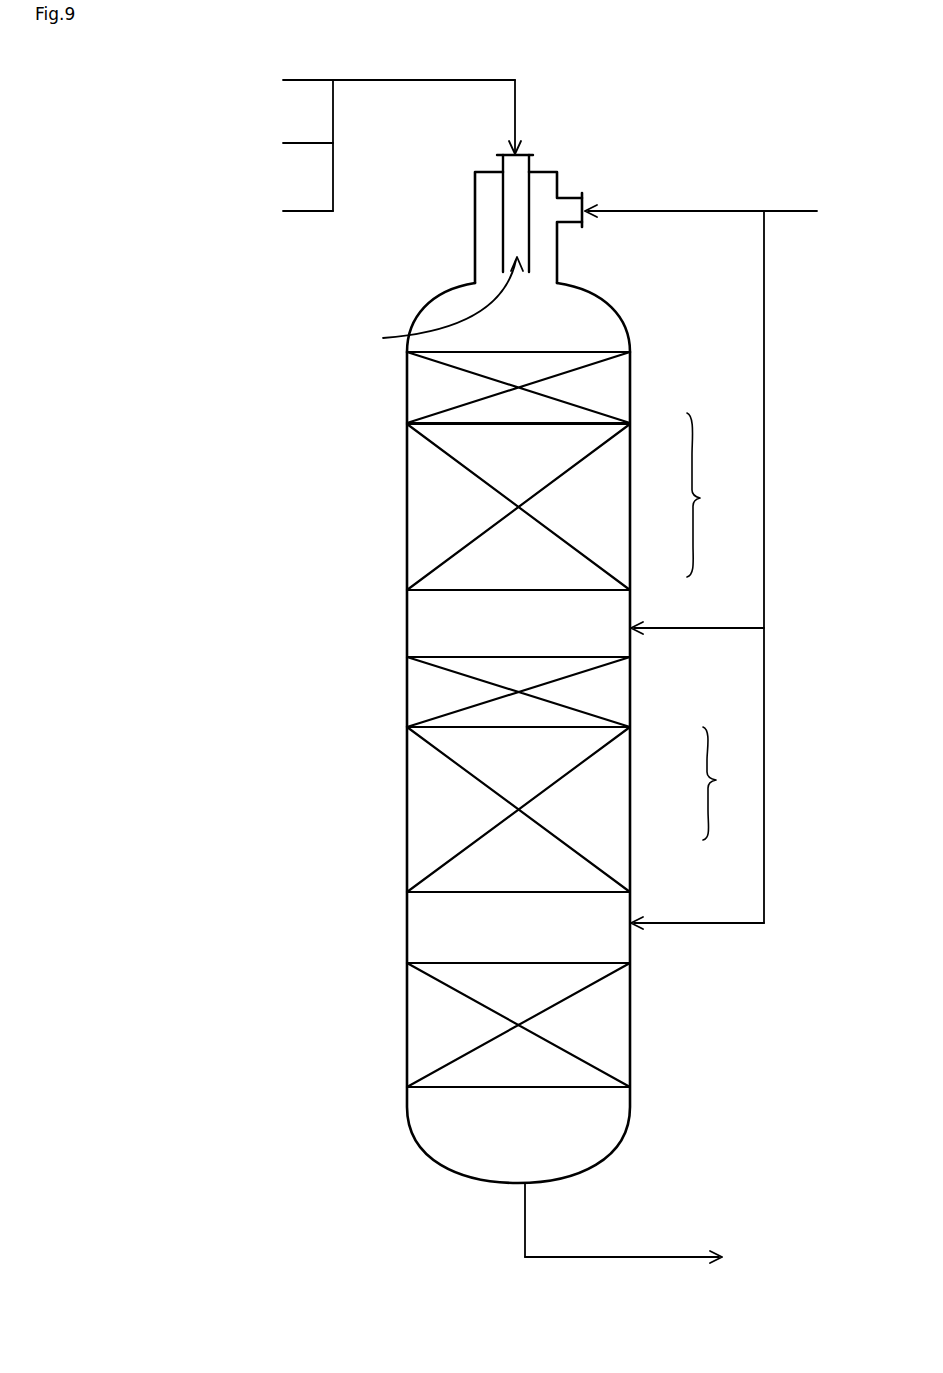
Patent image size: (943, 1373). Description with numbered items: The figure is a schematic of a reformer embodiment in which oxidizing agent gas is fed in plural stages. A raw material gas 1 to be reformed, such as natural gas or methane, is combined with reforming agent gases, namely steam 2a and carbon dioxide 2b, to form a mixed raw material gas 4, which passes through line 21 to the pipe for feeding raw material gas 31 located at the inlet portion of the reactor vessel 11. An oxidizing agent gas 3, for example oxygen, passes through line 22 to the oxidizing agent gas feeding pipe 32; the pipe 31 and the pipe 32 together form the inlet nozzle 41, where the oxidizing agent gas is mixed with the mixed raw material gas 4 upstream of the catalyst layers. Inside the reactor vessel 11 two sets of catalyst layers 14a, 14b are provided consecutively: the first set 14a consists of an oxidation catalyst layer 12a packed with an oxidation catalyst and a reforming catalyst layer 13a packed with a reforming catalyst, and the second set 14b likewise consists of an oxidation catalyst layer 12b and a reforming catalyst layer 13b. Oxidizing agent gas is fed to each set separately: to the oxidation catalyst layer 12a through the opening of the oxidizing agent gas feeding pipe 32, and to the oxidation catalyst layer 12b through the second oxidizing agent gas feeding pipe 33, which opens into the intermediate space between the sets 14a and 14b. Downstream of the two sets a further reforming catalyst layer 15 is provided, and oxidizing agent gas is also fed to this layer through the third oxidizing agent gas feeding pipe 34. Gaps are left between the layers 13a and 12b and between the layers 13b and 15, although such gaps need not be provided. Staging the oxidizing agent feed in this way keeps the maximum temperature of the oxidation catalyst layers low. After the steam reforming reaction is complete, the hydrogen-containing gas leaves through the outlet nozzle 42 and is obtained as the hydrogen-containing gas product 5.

The raw material gas 1 is at (382, 74).
The steam 2a is at (291, 151).
The carbon dioxide 2b is at (290, 212).
The oxidizing agent gas 3 is at (708, 213).
The mixed raw material gas 4 is at (469, 80).
The hydrogen-containing gas 5 is at (622, 1259).
The reactor vessel 11 is at (407, 456).
The oxidation catalyst layer 12a is at (617, 397).
The oxidation catalyst layer 12b is at (618, 705).
The reforming catalyst layer 13a is at (624, 550).
The reforming catalyst layer 13b is at (622, 817).
The set of catalyst layers 14a is at (718, 495).
The set of catalyst layers 14b is at (727, 783).
The reforming catalyst layer 15 is at (627, 1034).
The line 21 is at (393, 80).
The line 22 is at (685, 212).
The pipe for feeding raw material gas 31 is at (531, 162).
The oxidizing agent gas feeding pipe 32 is at (572, 196).
The second oxidizing agent gas feeding pipe 33 is at (715, 630).
The third oxidizing agent gas feeding pipe 34 is at (707, 927).
The inlet nozzle 41 is at (437, 302).
The outlet nozzle 42 is at (527, 1213).